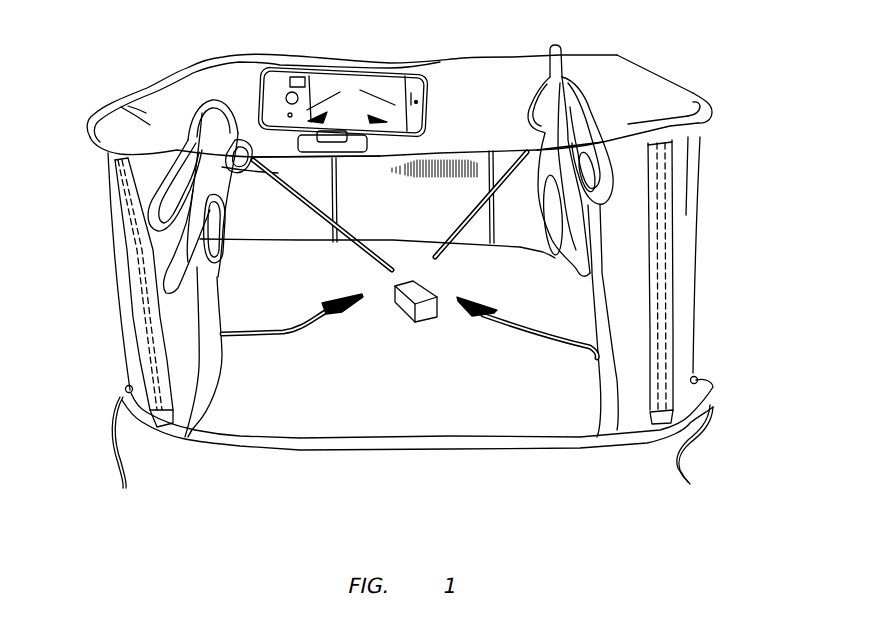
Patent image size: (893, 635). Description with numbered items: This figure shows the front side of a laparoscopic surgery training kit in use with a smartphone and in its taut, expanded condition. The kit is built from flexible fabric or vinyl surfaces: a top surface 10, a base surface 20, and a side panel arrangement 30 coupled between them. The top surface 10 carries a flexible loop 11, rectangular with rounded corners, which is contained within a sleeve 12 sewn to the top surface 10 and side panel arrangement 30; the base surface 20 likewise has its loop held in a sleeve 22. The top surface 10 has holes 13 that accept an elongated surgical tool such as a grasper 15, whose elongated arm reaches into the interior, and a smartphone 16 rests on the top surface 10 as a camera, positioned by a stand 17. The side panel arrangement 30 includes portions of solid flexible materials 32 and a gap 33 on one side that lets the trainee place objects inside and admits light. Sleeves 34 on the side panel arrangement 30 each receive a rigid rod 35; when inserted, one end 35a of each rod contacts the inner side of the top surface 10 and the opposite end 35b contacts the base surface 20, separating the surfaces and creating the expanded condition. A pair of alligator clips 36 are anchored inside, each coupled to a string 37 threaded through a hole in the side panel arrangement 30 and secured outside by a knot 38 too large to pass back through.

The top surface 10 is at (467, 83).
The flexible loop 11 is at (657, 77).
The sleeve 12 is at (690, 88).
The holes 13 is at (527, 140).
The grasper 15 is at (212, 98).
The smartphone 16 is at (415, 80).
The stand 17 is at (340, 141).
The base surface 20 is at (455, 420).
The sleeve 22 is at (413, 280).
The side panel arrangement 30 is at (703, 253).
The solid flexible materials 32 is at (163, 330).
The gap 33 is at (385, 413).
The sleeves 34 is at (120, 183).
The rods 35 is at (110, 207).
The one end of rod 35a is at (107, 155).
The opposite end of rod 35b is at (167, 425).
The alligator clips 36 is at (337, 314).
The string 37 is at (255, 335).
The knot 38 is at (123, 388).